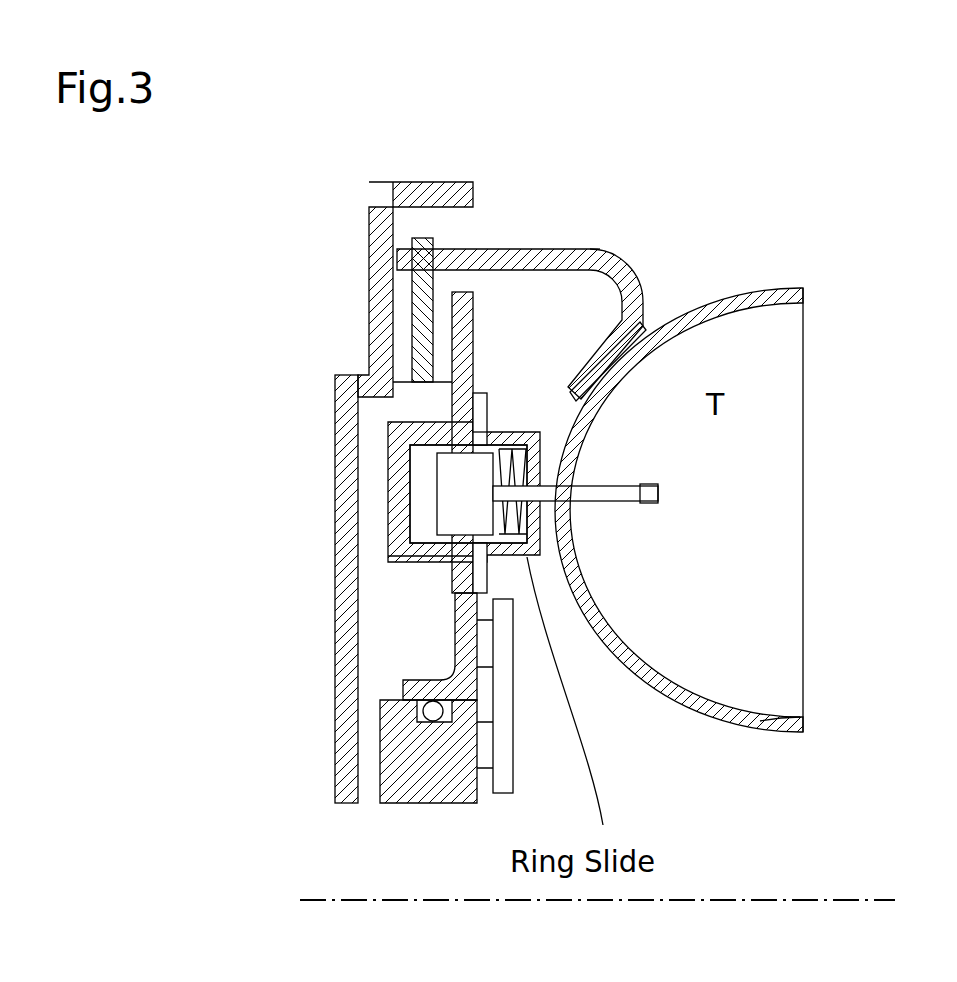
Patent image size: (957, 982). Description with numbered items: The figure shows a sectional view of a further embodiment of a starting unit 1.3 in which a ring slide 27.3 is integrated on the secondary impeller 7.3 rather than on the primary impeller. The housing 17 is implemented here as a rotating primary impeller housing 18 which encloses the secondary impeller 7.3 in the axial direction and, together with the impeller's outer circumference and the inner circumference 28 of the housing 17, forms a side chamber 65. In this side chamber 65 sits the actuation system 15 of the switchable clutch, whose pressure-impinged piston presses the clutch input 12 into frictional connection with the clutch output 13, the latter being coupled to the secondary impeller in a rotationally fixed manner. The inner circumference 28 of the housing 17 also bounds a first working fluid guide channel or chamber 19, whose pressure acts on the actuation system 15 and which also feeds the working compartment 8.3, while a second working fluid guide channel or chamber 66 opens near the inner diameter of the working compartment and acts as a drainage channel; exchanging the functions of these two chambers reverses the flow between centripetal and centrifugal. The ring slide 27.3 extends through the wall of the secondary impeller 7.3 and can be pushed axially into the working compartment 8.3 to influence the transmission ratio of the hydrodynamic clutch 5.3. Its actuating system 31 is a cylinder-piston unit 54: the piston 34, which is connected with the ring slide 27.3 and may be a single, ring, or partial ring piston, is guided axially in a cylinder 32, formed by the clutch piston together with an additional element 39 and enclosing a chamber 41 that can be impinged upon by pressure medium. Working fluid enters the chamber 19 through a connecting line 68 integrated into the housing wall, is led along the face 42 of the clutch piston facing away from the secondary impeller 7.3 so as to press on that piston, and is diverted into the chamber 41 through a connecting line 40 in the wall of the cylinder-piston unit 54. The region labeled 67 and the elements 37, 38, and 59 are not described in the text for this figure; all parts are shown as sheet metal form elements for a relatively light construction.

The primary impeller housing 18 is at (370, 232).
The housing 17 is at (370, 267).
The clutch input 12 is at (383, 307).
The actuating system 31 is at (374, 429).
The clutch output 13 is at (458, 300).
The connecting line 40 is at (393, 480).
The additional element 39 is at (390, 554).
The actuation system 15 is at (312, 502).
The stop 38 is at (438, 573).
The cylinder-piston unit 54 is at (500, 420).
The chamber 41 is at (420, 505).
The piston 34 is at (448, 495).
The ring slide 27.3 is at (658, 490).
The face of piston 42 is at (433, 655).
The connecting line 68 is at (367, 737).
The first working fluid guide channel or chamber 19 is at (444, 628).
The ring slide 59 is at (493, 533).
The inner circumference of housing 28 is at (373, 624).
The secondary impeller 7.3 is at (788, 288).
The cup wall 37 is at (752, 703).
The starting unit 1.3 is at (710, 179).
The assembly 5.3 is at (750, 247).
The cylinder 32 is at (562, 505).
The working compartment 8.3 is at (742, 595).
The side chamber 65 is at (732, 781).
The second working fluid guide channel or chamber 66 is at (887, 798).
The region 67 is at (685, 228).